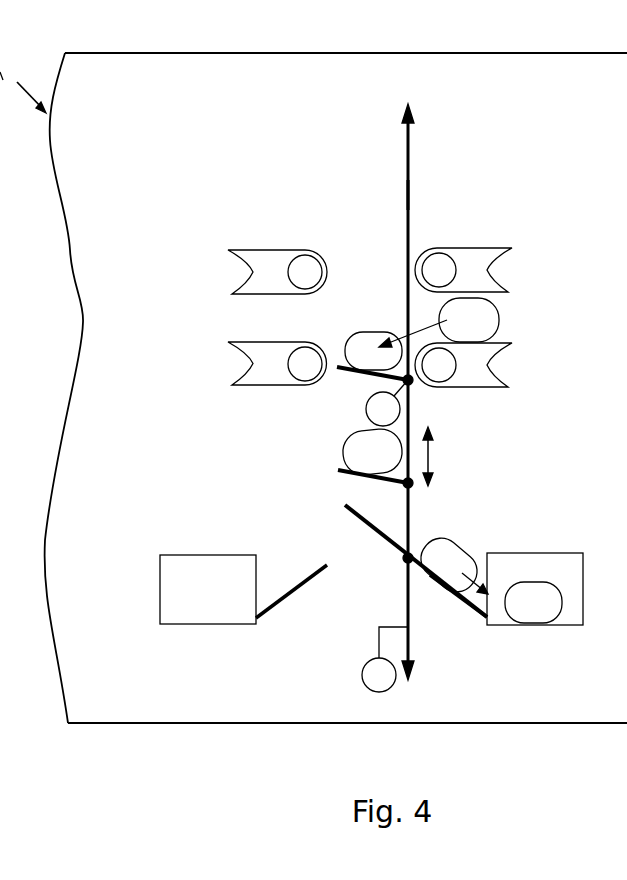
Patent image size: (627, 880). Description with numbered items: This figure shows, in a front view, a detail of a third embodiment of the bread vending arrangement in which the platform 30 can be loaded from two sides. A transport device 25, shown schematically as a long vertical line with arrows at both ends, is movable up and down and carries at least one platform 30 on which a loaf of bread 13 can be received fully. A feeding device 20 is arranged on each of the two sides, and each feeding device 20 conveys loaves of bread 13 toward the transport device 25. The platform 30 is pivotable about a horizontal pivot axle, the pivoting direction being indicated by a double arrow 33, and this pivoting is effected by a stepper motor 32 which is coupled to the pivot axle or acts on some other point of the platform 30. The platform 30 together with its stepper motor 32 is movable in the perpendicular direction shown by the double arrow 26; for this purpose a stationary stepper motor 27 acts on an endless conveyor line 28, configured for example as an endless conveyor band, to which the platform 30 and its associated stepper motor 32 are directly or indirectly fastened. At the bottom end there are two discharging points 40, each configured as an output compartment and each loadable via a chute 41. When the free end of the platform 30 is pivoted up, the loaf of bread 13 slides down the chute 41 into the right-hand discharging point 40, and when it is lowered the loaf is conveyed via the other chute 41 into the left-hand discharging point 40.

The loaf of bread 13 is at (482, 317).
The feeding device 20 is at (265, 260).
The transport device 25 is at (418, 153).
The double arrow 26 is at (409, 237).
The stepper motor 27 is at (362, 676).
The endless conveyor line 28 is at (407, 195).
The platform 30 is at (363, 520).
The stepper motor 32 is at (367, 409).
The double arrow 33 is at (329, 491).
The discharging point 40 is at (182, 572).
The chute 41 is at (283, 605).